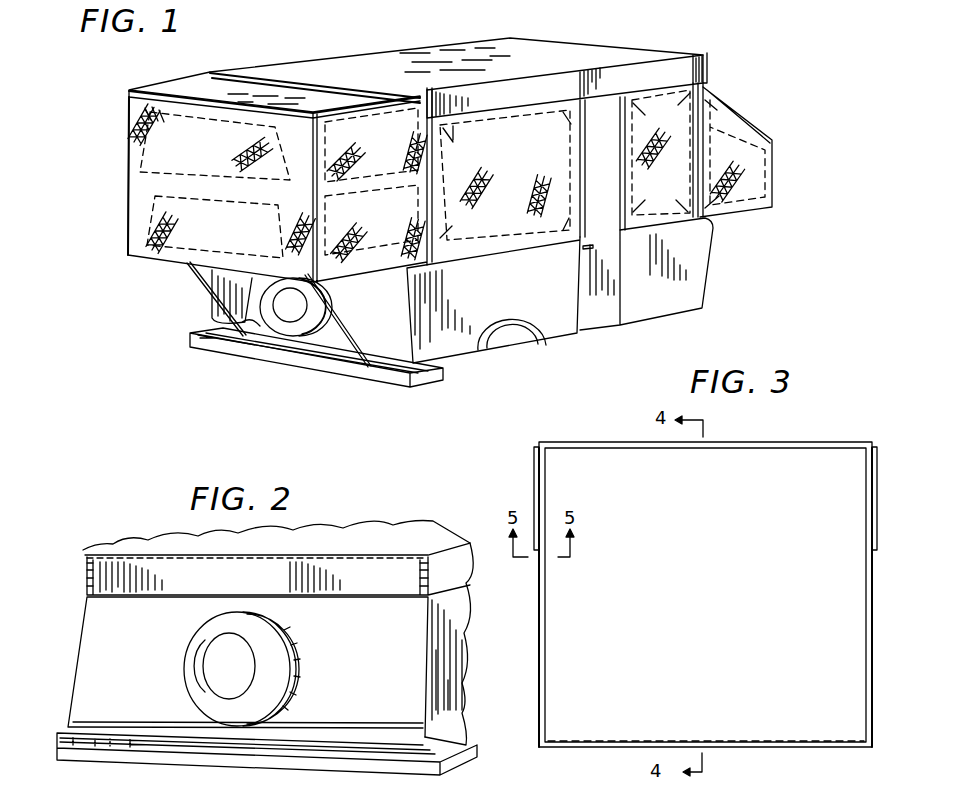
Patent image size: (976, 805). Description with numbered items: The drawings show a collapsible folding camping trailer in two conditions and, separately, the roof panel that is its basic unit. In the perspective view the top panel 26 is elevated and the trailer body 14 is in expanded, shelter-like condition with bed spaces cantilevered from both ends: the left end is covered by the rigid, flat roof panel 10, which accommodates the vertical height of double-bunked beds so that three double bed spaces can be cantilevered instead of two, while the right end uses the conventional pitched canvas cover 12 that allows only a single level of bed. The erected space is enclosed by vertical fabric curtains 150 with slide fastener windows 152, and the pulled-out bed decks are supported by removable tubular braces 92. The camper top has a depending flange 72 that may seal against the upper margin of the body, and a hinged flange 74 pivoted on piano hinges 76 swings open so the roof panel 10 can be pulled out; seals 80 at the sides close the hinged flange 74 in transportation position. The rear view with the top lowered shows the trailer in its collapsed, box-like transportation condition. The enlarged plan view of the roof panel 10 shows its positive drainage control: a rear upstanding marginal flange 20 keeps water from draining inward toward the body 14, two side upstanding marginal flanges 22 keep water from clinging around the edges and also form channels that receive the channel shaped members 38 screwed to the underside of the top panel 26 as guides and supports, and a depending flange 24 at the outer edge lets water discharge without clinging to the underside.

In FIG. 1, the roof panel 10 is at (260, 100).
In FIG. 3, the roof panel 10 is at (704, 645).
In FIG. 1, the pitched canvas cover 12 is at (747, 137).
In FIG. 1, the trailer body 14 is at (577, 333).
In FIG. 2, the trailer body 14 is at (470, 700).
In FIG. 3, the rear upstanding marginal flange 20 is at (600, 418).
In FIG. 1, the side upstanding marginal flanges 22 is at (172, 85).
In FIG. 3, the side upstanding marginal flanges 22 is at (547, 668).
In FIG. 1, the depending flange 24 is at (160, 110).
In FIG. 3, the depending flange 24 is at (612, 750).
In FIG. 1, the top panel 26 is at (507, 63).
In FIG. 2, the top panel 26 is at (407, 547).
In FIG. 3, the top panel 26 is at (812, 795).
In FIG. 3, the channel shaped members 38 is at (535, 465).
In FIG. 1, the depending flange 72 is at (688, 72).
In FIG. 2, the depending flange 72 is at (468, 570).
In FIG. 2, the hinged flange 74 is at (358, 577).
In FIG. 2, the piano hinges 76 is at (353, 556).
In FIG. 2, the side seals 80 is at (83, 553).
In FIG. 1, the removable tubular braces 92 is at (347, 343).
In FIG. 1, the vertical fabric curtains 150 is at (663, 90).
In FIG. 1, the slide fastener windows 152 is at (222, 150).